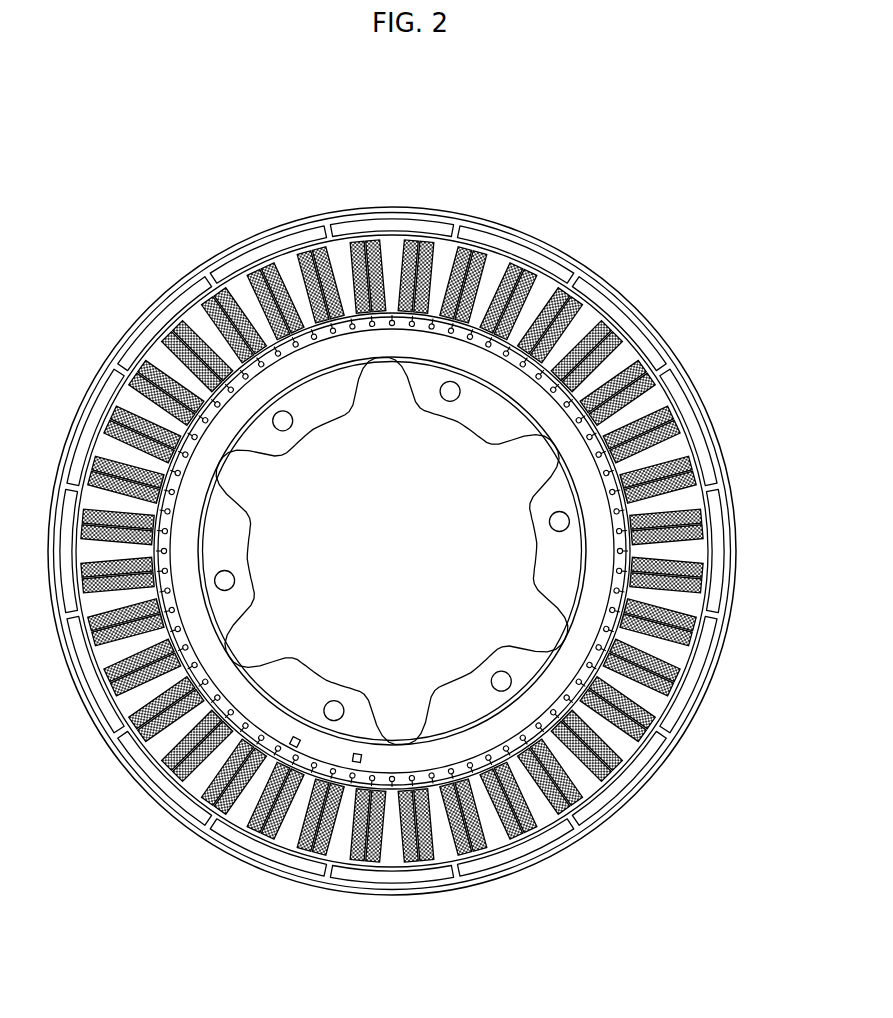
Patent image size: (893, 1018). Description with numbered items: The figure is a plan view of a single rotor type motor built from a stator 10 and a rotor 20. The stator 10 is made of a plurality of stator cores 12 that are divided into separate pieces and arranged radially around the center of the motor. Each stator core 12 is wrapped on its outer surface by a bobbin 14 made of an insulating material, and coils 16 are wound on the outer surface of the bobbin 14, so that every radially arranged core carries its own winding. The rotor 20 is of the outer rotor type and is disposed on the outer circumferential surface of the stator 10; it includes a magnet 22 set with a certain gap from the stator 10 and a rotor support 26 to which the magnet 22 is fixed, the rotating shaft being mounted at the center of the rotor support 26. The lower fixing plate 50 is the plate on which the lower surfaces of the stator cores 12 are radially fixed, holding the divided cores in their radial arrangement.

The stator 10 is at (742, 276).
The stator core 12 is at (613, 364).
The bobbin 14 is at (641, 391).
The coil 16 is at (621, 351).
The rotor 20 is at (392, 513).
The magnet 22 is at (502, 241).
The rotor support 26 is at (547, 244).
The lower fixing plate 50 is at (322, 400).